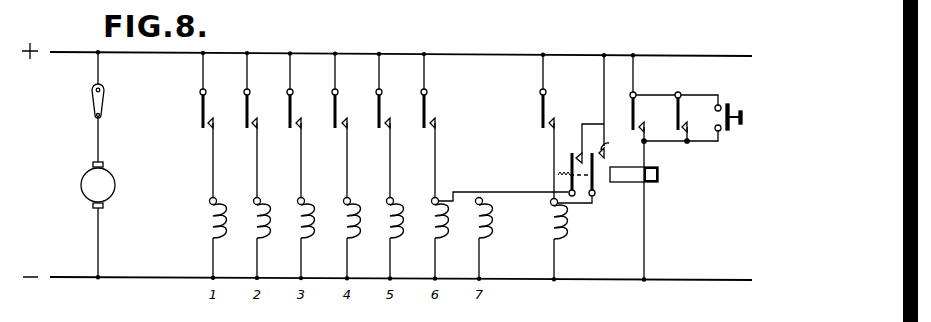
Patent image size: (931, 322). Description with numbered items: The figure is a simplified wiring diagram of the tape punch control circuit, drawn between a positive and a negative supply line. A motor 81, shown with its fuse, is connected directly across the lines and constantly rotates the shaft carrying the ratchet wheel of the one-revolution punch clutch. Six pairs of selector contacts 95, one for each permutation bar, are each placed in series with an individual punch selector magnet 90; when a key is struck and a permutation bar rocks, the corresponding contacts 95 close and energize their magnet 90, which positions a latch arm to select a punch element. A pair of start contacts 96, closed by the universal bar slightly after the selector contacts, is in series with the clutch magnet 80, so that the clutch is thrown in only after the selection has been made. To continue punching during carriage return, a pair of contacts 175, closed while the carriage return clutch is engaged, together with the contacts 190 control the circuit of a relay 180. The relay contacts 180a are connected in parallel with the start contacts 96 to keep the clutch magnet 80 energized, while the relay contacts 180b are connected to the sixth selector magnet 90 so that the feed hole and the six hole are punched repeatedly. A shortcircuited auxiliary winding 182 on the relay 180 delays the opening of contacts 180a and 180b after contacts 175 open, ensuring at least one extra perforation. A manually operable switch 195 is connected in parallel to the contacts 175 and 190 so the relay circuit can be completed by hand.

The motor 81 is at (82, 181).
The selector contacts 95 is at (211, 119).
The punch selector magnets 90 is at (207, 218).
The start contacts 96 is at (555, 120).
The clutch magnet 80 is at (549, 235).
The relay contacts 180b is at (580, 152).
The relay contacts 180a is at (619, 151).
The relay 180 is at (632, 174).
The shortcircuited auxiliary winding 182 is at (652, 178).
The contacts 175 is at (639, 122).
The contacts 190 is at (687, 121).
The manually operable switch 195 is at (713, 132).